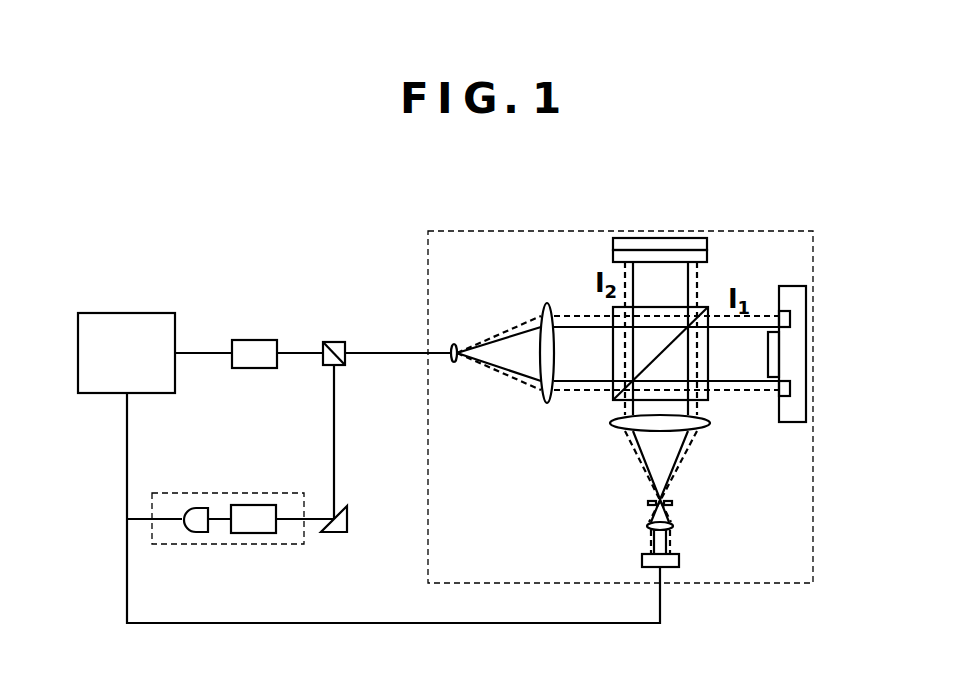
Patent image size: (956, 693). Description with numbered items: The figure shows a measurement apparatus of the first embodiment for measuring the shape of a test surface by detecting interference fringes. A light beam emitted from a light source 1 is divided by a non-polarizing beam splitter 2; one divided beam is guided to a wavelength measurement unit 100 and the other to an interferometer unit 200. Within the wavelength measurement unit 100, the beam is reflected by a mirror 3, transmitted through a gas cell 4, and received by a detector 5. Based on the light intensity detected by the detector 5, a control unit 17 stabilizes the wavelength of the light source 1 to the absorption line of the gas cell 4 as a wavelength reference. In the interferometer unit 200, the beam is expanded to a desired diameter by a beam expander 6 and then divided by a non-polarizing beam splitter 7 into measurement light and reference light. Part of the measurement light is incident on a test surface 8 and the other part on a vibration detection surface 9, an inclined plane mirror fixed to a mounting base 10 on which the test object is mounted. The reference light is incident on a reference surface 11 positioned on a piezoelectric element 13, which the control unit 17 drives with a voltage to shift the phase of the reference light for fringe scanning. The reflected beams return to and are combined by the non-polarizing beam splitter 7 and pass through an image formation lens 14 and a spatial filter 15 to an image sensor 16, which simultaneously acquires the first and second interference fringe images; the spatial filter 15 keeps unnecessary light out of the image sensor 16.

The light source 1 is at (255, 370).
The non-polarizing beam splitter 2 is at (332, 340).
The mirror 3 is at (337, 534).
The gas cell 4 is at (252, 535).
The detector 5 is at (197, 534).
The beam expander 6 is at (456, 362).
The non-polarizing beam splitter 7 is at (613, 400).
The test surface 8 is at (768, 354).
The vibration detection surface 9 is at (790, 390).
The mounting base 10 is at (792, 296).
The reference surface 11 is at (660, 258).
The piezoelectric element 13 is at (622, 246).
The image formation lens 14 is at (674, 526).
The spatial filter 15 is at (648, 503).
The image sensor 16 is at (680, 560).
The control unit 17 is at (100, 395).
The wavelength measurement unit 100 is at (172, 493).
The interferometer unit 200 is at (464, 230).